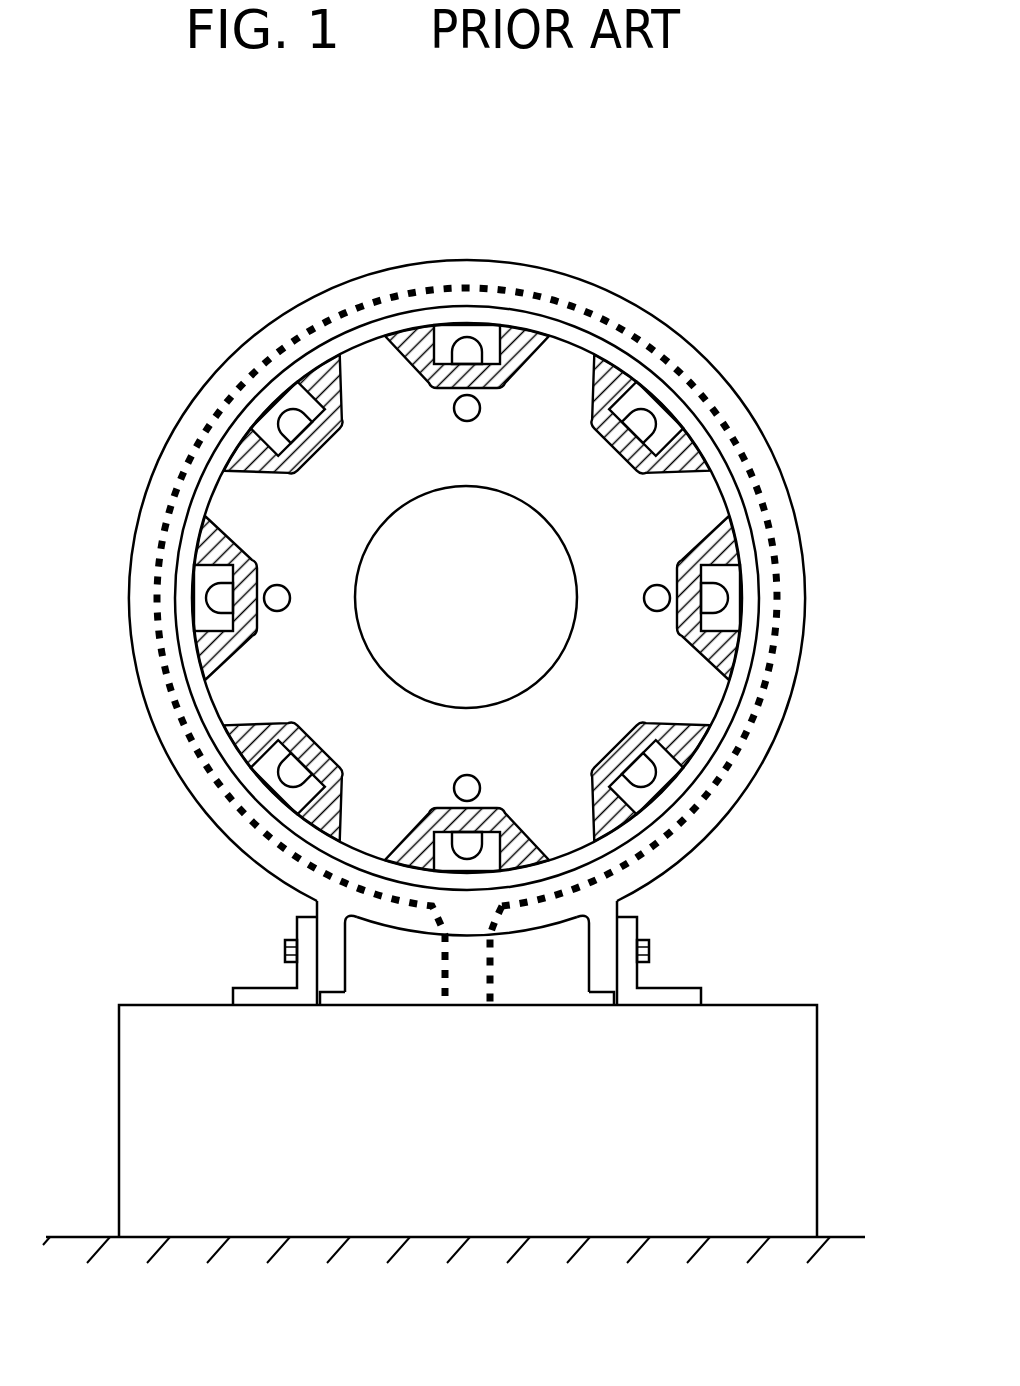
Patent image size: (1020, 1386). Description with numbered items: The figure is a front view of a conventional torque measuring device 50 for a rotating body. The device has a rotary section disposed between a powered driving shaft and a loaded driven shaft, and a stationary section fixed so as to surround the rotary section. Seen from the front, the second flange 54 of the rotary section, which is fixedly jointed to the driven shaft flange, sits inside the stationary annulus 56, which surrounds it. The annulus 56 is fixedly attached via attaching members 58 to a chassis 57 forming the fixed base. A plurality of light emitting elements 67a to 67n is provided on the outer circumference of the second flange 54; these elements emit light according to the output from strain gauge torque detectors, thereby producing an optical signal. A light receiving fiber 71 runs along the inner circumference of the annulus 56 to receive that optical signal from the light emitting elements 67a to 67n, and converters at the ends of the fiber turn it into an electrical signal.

The torque measuring device 50 is at (293, 277).
The second flange 54 is at (232, 690).
The annulus 56 is at (654, 332).
The chassis 57 is at (800, 1057).
The attaching members 58 is at (603, 927).
The light emitting element 67a is at (471, 342).
The light emitting element 67n is at (283, 418).
The light receiving fiber 71 is at (697, 384).